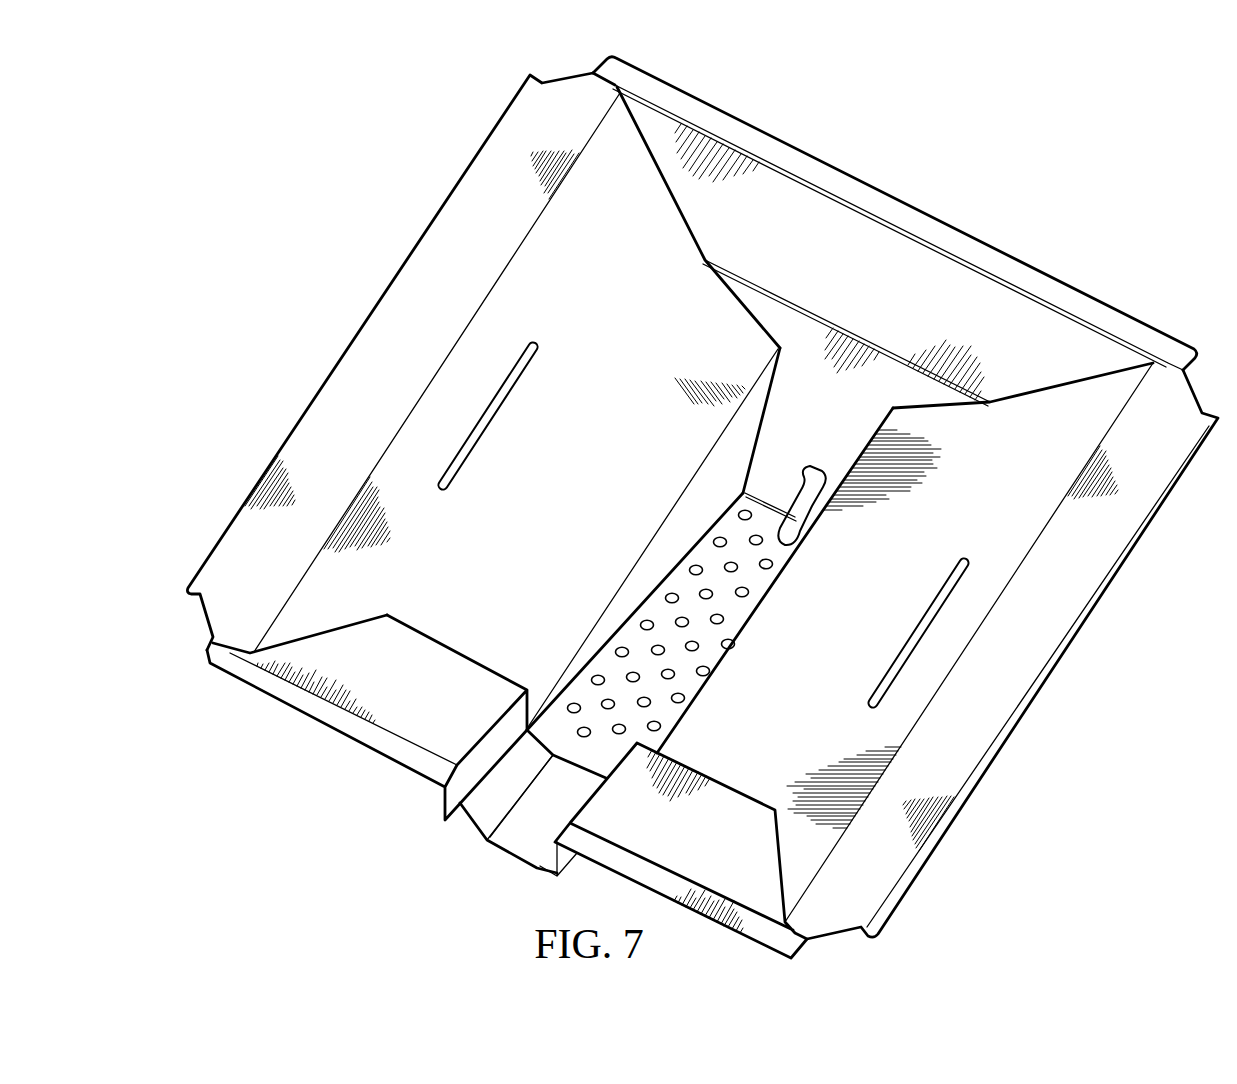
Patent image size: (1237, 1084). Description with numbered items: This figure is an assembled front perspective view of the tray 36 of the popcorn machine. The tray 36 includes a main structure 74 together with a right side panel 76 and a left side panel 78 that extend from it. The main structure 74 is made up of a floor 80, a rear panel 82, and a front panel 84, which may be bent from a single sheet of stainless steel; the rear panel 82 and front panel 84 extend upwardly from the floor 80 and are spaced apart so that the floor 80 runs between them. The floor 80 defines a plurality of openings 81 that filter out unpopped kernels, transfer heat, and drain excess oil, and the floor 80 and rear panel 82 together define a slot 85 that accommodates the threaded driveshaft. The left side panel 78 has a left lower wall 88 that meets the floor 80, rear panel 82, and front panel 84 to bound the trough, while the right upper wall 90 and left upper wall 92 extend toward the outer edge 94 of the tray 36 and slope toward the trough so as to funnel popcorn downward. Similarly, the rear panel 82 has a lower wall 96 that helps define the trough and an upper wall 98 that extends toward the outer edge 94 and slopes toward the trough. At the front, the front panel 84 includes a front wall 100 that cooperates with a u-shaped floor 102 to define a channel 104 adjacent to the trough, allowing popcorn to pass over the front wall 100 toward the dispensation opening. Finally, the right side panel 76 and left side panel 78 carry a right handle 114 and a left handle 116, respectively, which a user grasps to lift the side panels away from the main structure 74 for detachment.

The tray 36 is at (1066, 94).
The main structure 74 is at (948, 122).
The right side panel 76 is at (1028, 770).
The left side panel 78 is at (352, 249).
The floor 80 is at (633, 647).
The openings 81 is at (670, 592).
The rear panel 82 is at (963, 208).
The front panel 84 is at (335, 756).
The slot 85 is at (808, 477).
The left lower wall 88 is at (683, 520).
The right upper wall 90 is at (1028, 408).
The left upper wall 92 is at (520, 300).
The outer edge 94 is at (450, 190).
The lower wall 96 is at (813, 333).
The upper wall 98 is at (867, 240).
The front wall 100 is at (745, 790).
The u-shaped floor 102 is at (518, 843).
The channel 104 is at (488, 813).
The right handle 114 is at (922, 616).
The left handle 116 is at (490, 420).